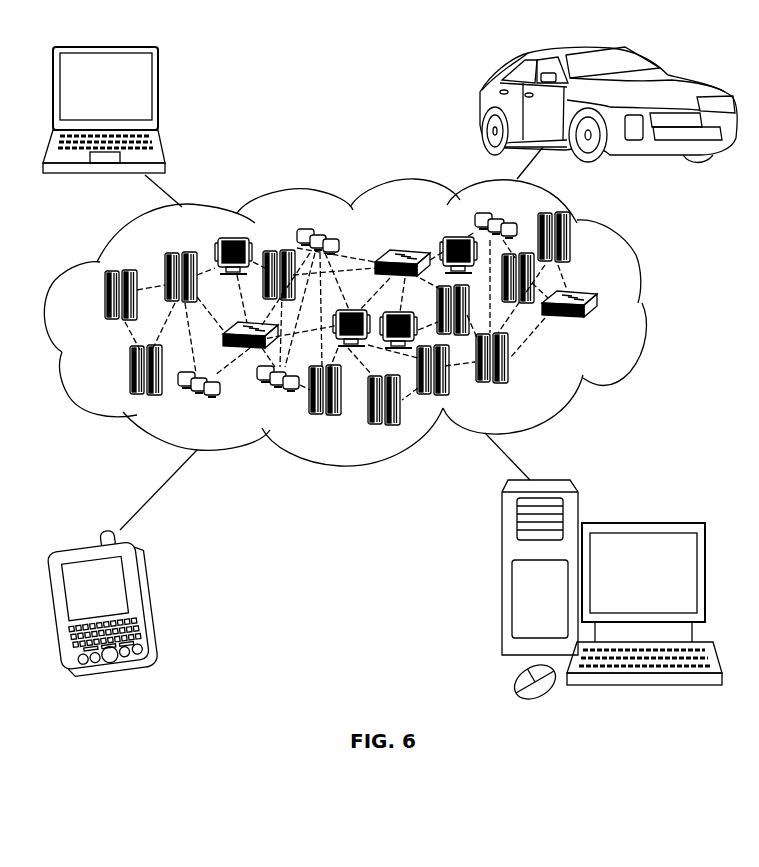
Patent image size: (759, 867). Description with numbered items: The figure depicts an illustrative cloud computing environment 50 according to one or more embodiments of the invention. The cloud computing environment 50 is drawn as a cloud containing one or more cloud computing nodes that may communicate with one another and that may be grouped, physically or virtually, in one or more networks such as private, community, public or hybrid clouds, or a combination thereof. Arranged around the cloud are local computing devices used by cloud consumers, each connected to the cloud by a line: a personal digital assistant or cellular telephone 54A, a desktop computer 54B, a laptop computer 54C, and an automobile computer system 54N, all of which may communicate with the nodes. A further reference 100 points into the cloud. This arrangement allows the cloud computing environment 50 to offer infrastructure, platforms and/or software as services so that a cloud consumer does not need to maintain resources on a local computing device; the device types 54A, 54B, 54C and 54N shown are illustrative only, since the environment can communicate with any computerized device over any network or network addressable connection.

The cloud computing environment 50 is at (642, 303).
The cloud computing nodes network 100 is at (603, 328).
The personal digital assistant or cellular telephone 54A is at (148, 595).
The desktop computer 54B is at (642, 522).
The laptop computer 54C is at (158, 92).
The automobile computer system 54N is at (478, 105).